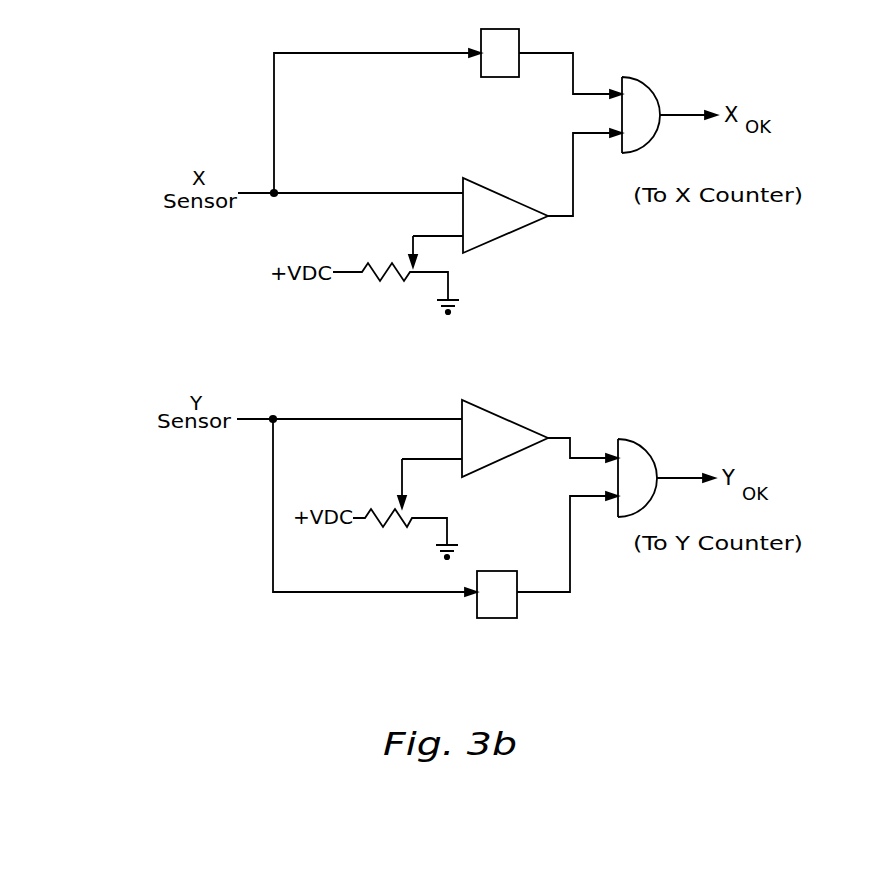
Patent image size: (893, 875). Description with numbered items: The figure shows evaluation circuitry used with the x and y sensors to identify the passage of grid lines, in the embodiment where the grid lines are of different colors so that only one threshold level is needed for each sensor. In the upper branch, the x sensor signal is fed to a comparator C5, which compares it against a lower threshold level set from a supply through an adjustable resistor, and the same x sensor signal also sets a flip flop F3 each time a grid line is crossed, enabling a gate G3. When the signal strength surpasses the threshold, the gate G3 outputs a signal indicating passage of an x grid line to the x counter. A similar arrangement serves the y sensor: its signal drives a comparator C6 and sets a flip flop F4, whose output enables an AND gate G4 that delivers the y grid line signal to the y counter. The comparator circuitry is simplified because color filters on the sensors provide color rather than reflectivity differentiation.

The flip flop F3 is at (519, 44).
The gate G3 is at (648, 82).
The comparator C5 is at (493, 187).
The comparator C6 is at (518, 420).
The AND gate G4 is at (646, 447).
The flip flop F4 is at (517, 610).